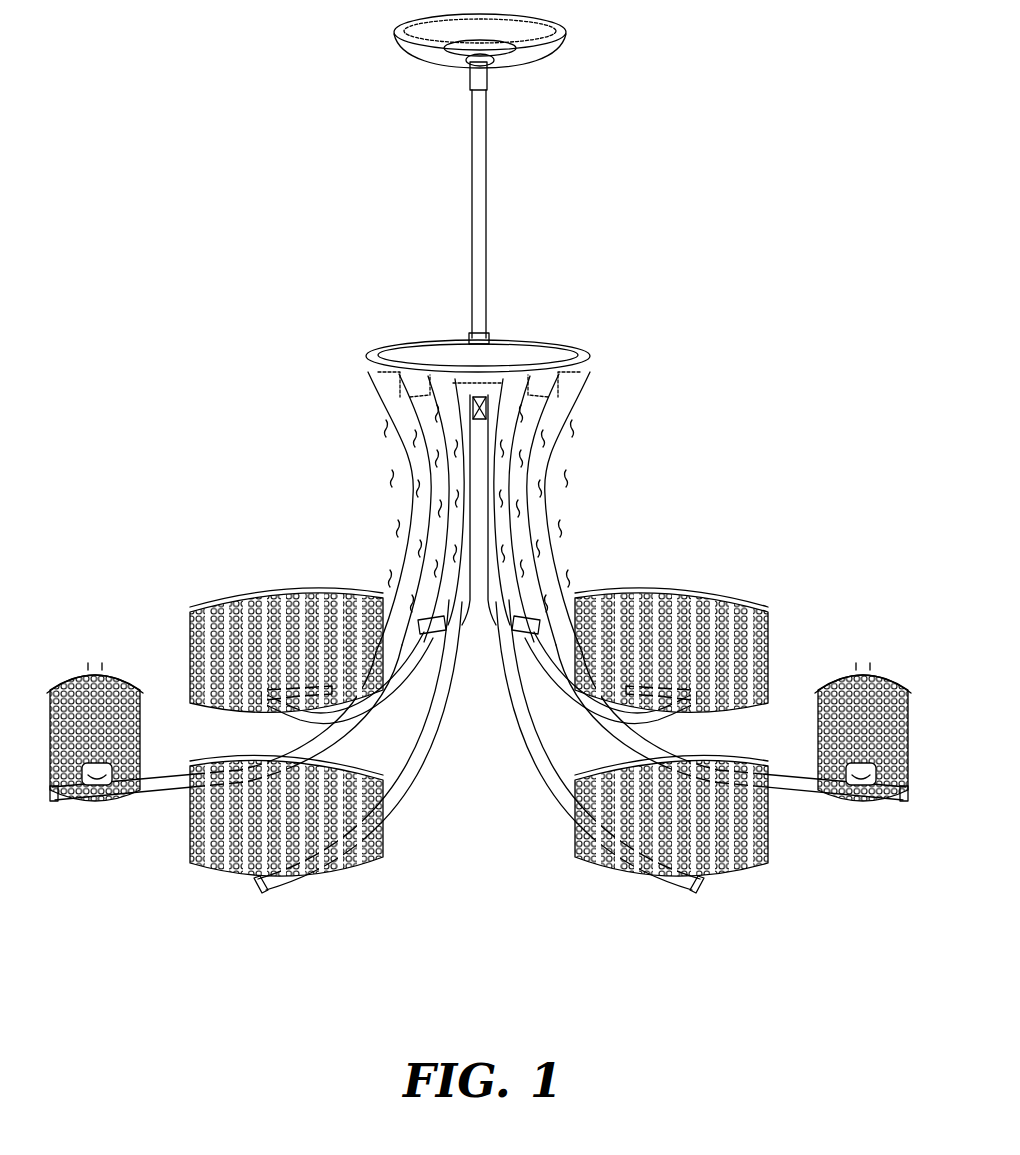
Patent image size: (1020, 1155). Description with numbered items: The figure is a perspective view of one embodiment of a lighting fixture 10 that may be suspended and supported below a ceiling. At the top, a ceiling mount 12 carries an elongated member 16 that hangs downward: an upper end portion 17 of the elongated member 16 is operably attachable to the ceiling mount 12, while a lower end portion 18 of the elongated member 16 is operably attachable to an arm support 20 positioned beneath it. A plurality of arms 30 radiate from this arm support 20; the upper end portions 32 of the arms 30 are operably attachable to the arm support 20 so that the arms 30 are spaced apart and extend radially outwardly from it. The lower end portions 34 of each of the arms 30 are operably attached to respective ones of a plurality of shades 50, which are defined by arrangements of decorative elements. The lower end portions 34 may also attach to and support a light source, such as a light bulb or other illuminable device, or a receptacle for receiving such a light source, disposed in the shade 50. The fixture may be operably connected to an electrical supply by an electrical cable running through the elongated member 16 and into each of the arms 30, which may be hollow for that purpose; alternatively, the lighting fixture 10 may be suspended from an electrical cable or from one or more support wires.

The lighting fixture 10 is at (257, 158).
The ceiling mount 12 is at (551, 37).
The elongated member 16 is at (490, 187).
The upper end portion 17 is at (481, 117).
The lower end portion 18 is at (483, 304).
The arm support 20 is at (600, 366).
The arms 30 is at (438, 497).
The upper end portions 32 is at (515, 430).
The lower end portions 34 is at (601, 714).
The shades 50 is at (262, 585).